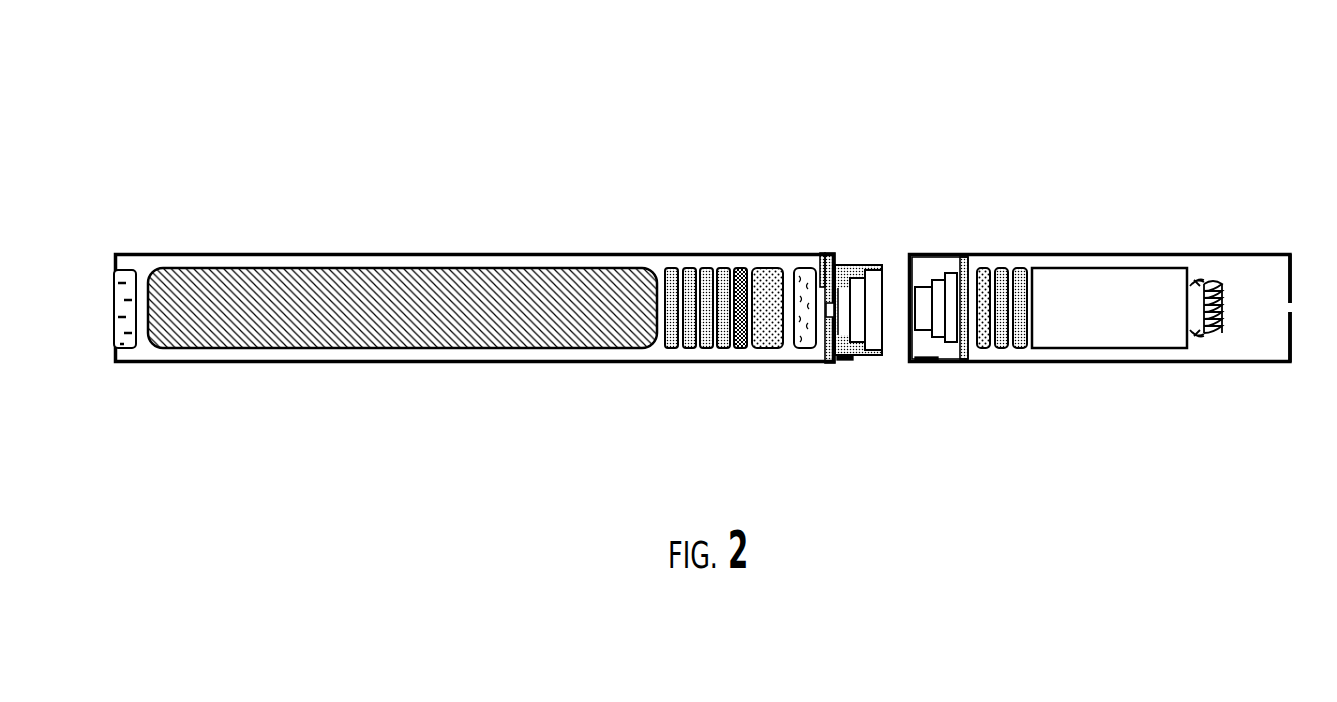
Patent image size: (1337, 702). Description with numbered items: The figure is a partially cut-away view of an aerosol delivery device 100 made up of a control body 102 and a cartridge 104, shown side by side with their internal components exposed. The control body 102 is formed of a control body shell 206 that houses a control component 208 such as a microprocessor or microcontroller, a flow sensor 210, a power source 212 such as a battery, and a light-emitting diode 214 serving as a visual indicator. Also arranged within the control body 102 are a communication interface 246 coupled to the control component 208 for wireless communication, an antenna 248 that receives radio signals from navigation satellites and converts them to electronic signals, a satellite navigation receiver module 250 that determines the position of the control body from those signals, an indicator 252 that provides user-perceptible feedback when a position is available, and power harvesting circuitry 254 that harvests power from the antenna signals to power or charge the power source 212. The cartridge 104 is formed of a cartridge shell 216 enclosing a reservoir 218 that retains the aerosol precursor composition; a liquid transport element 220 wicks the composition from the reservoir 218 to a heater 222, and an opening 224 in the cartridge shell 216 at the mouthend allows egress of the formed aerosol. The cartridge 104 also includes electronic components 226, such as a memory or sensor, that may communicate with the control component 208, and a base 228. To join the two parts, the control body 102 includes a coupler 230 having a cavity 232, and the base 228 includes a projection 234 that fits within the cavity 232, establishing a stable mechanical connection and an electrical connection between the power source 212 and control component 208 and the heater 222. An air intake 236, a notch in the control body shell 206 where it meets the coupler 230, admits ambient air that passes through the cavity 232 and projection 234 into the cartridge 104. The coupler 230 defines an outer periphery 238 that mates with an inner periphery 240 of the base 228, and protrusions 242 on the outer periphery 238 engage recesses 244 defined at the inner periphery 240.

The aerosol delivery device 100 is at (597, 94).
The control body 102 is at (380, 195).
The cartridge 104 is at (1099, 175).
The control body shell 206 is at (475, 336).
The control component 208 is at (754, 339).
The flow sensor 210 is at (820, 372).
The power source 212 is at (402, 342).
The light-emitting diode 214 is at (147, 343).
The cartridge shell 216 is at (1100, 342).
The reservoir 218 is at (1109, 334).
The liquid transport element 220 is at (1266, 342).
The heater 222 is at (1228, 348).
The opening 224 is at (1251, 285).
The electronic components 226 is at (1011, 283).
The base 228 is at (967, 399).
The coupler 230 is at (878, 384).
The cavity 232 is at (842, 265).
The projection 234 is at (965, 275).
The air intake 236 is at (785, 238).
The outer periphery 238 is at (890, 280).
The inner periphery 240 is at (897, 258).
The protrusions 242 is at (863, 349).
The recesses 244 is at (951, 364).
The communication interface 246 is at (761, 286).
The antenna 248 is at (700, 272).
The satellite navigation receiver module 250 is at (689, 342).
The indicator 252 is at (659, 283).
The power harvesting circuitry 254 is at (639, 339).